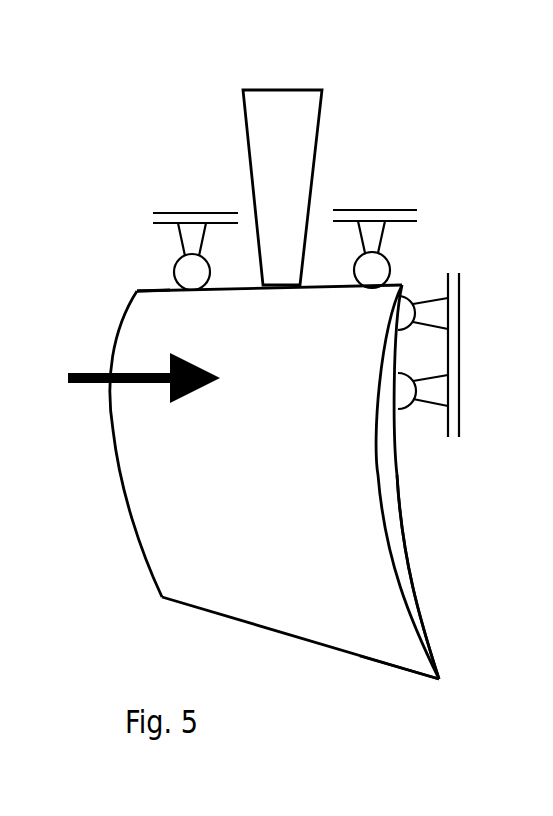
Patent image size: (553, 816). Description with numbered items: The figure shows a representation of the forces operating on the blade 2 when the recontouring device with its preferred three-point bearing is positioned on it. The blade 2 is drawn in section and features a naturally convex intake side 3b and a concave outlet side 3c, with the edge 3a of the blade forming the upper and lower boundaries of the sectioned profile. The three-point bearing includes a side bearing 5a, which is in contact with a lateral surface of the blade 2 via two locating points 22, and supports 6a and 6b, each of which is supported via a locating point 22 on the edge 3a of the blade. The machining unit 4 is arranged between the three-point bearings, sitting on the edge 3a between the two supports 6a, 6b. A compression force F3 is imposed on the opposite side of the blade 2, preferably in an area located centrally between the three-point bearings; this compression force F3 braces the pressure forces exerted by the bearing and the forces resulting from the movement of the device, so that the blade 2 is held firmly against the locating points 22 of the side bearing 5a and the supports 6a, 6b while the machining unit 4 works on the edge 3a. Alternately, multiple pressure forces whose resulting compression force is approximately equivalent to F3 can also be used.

The blade 2 is at (412, 522).
The edge of the blade 3a is at (137, 291).
The convex intake side 3b is at (325, 517).
The concave outlet side 3c is at (418, 573).
The machining unit 4 is at (280, 110).
The side bearing 5a is at (450, 330).
The support 6a is at (378, 215).
The support 6b is at (195, 210).
The locating point 22 is at (385, 289).
The compression force F3 is at (88, 372).